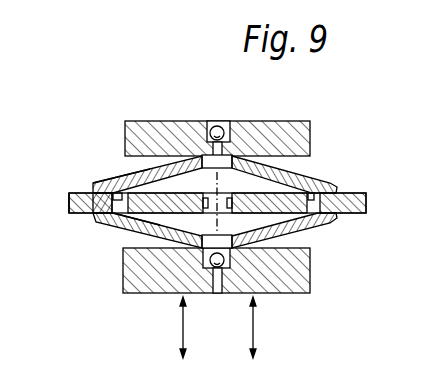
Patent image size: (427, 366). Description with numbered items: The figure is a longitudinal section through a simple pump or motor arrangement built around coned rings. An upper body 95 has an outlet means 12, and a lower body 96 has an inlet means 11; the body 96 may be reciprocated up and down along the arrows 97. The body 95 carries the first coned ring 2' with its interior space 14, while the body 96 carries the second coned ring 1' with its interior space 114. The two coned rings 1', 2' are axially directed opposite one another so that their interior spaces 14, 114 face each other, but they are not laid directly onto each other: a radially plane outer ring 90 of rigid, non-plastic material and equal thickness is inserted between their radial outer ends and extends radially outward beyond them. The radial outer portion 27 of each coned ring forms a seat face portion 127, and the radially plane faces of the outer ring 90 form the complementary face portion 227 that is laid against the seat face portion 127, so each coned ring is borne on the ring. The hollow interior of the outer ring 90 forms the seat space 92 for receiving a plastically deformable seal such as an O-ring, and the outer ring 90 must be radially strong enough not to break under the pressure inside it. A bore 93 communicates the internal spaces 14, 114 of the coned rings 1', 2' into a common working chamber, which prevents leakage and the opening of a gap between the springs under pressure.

The body 95 is at (302, 133).
The body 96 is at (297, 281).
The outlet means 12 is at (213, 128).
The inlet means 11 is at (212, 267).
The outer ring 90 is at (366, 200).
The interior space 114 is at (244, 231).
The interior space 14 is at (176, 180).
The radial outer portion 27 is at (105, 181).
The complementary face portion 227 is at (81, 192).
The seat face portion 127 is at (90, 213).
The first coned ring 2' is at (297, 169).
The seat space 92 is at (110, 224).
The bore 93 is at (207, 200).
The second coned ring 1' is at (300, 234).
The arrows 97 is at (266, 328).